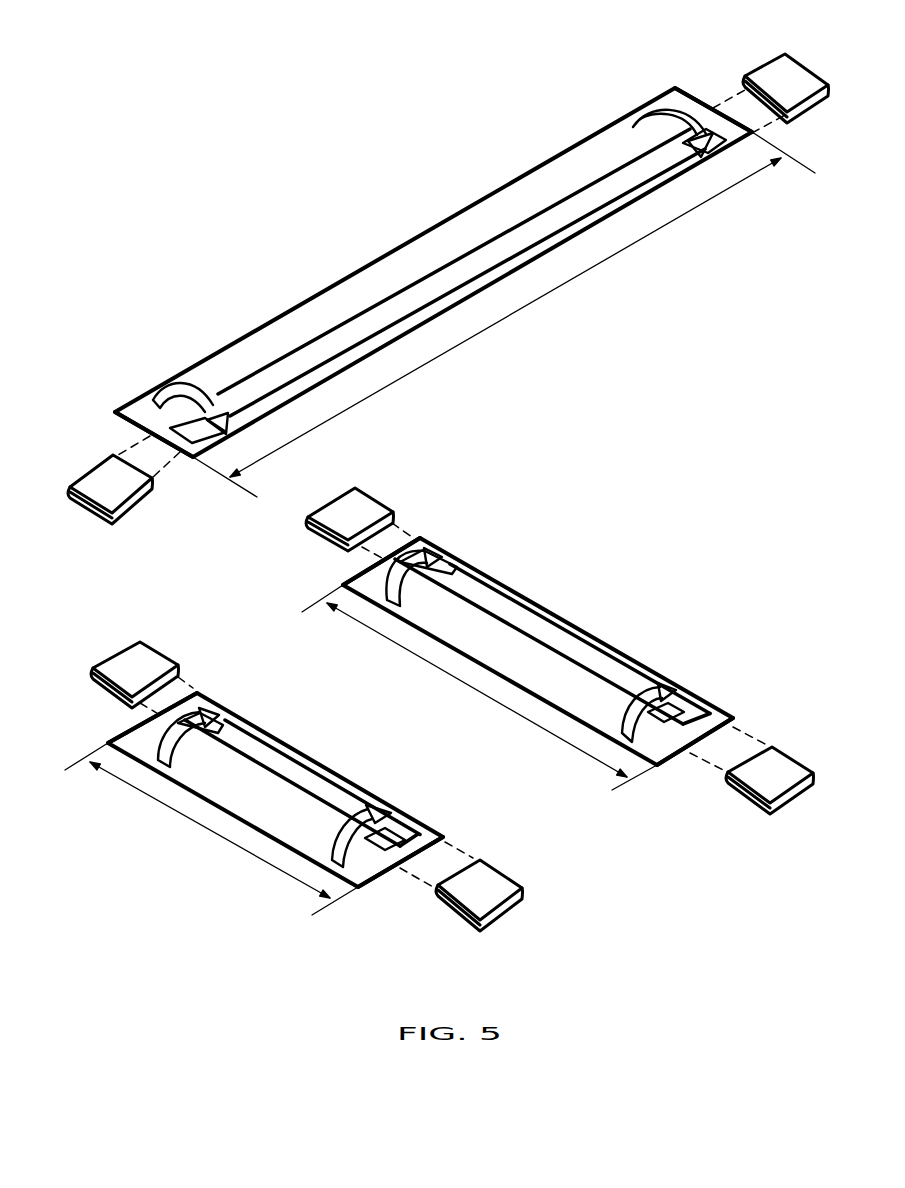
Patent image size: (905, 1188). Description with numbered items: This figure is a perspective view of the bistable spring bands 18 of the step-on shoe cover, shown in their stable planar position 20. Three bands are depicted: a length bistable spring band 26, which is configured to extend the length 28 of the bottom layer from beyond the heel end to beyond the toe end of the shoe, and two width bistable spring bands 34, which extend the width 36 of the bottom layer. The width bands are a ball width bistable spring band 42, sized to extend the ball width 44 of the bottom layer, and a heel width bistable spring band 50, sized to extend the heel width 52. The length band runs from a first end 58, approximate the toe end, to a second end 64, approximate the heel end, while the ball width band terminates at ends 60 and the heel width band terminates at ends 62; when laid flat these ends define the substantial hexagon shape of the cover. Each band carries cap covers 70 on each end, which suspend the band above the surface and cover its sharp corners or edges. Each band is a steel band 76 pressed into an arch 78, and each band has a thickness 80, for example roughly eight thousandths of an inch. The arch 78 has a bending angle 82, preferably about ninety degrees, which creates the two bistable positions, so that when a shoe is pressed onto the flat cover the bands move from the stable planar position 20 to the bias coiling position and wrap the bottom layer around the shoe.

The stable planar position 20 is at (117, 324).
The bistable spring band 18 is at (445, 218).
The length bistable spring band 26 is at (433, 272).
The steel band 76 is at (448, 487).
The width bistable spring band 34 is at (434, 712).
The ball width bistable spring band 42 is at (552, 651).
The heel width bistable spring band 50 is at (275, 777).
The length 28 is at (624, 252).
The width 36 is at (500, 703).
The ball width 44 is at (479, 687).
The heel width 52 is at (211, 829).
The first end 58 is at (703, 92).
The second end 64 is at (127, 428).
The ends 60 is at (343, 578).
The ends 62 is at (118, 733).
The cap cover 70 is at (122, 488).
The arch 78 is at (203, 398).
The thickness 80 is at (305, 298).
The bending angle 82 is at (176, 402).